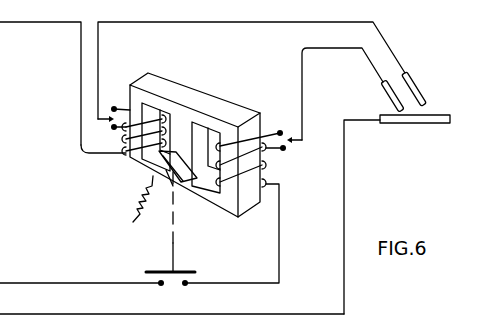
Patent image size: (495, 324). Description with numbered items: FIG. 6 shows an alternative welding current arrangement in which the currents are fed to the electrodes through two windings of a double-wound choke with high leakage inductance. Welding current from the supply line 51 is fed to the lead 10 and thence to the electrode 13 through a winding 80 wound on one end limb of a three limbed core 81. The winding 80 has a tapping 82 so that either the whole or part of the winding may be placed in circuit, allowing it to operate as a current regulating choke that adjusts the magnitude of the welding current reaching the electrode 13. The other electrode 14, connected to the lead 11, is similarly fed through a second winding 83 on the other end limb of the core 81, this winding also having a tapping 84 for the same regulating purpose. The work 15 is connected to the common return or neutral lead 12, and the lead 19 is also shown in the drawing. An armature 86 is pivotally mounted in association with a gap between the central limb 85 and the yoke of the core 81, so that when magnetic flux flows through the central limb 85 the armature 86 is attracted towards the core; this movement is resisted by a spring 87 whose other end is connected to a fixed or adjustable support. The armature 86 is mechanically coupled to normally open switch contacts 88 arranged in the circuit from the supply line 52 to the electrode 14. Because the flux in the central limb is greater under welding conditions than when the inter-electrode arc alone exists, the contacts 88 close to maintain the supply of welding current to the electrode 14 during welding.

The lead 10 is at (386, 41).
The lead 11 is at (368, 58).
The common return or neutral lead 12 is at (349, 153).
The electrode 13 is at (422, 96).
The electrode 14 is at (390, 99).
The work 15 is at (418, 123).
The return conductor 19 is at (172, 306).
The welding current supply line 51 is at (18, 22).
The welding current supply line 52 is at (80, 275).
The winding 80 is at (118, 158).
The three limbed core 81 is at (210, 97).
The tapping 82 is at (111, 128).
The second winding 83 is at (248, 178).
The tapping 84 is at (283, 148).
The central limb 85 is at (183, 155).
The armature 86 is at (173, 186).
The spring 87 is at (142, 192).
The switch contacts 88 is at (181, 272).